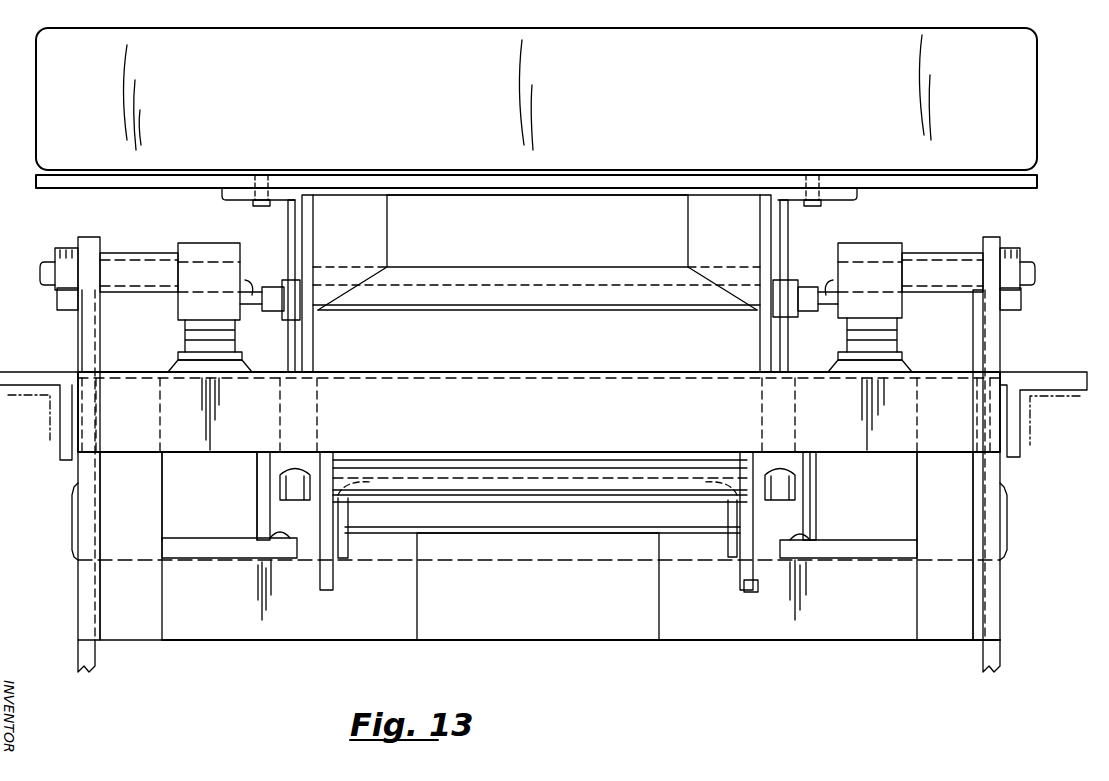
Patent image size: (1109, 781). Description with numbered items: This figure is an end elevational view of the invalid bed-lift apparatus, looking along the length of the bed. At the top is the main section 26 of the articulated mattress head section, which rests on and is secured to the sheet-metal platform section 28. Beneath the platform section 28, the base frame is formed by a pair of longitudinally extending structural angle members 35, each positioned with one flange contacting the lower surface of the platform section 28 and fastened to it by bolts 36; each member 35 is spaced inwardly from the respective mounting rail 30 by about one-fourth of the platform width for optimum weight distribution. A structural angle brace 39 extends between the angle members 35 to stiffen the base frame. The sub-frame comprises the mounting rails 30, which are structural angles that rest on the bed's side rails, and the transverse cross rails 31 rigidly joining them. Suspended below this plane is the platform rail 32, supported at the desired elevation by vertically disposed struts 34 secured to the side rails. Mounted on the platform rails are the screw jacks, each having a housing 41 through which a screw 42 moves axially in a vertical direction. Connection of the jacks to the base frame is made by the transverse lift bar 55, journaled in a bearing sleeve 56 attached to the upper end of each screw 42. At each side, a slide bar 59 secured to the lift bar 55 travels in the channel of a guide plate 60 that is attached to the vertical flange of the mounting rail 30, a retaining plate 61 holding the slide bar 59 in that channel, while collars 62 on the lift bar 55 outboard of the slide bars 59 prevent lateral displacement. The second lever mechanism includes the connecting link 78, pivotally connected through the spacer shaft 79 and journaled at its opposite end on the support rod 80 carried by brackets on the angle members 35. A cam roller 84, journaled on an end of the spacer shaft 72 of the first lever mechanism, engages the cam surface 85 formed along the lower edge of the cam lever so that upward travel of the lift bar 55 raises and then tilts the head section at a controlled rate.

The main section 26 is at (872, 28).
The platform section 28 is at (958, 186).
The mounting rail 30 is at (66, 430).
The cross rail 31 is at (540, 431).
The platform rail 32 is at (556, 615).
The strut 34 is at (145, 535).
The structural angle member 35 is at (228, 198).
The bolt 36 is at (287, 176).
The structural angle brace 39 is at (560, 254).
The housing 41 is at (207, 503).
The screw 42 is at (185, 330).
The lift bar 55 is at (1030, 284).
The bearing sleeve 56 is at (212, 243).
The slide bar 59 is at (90, 244).
The guide plate 60 is at (80, 343).
The retaining plate 61 is at (72, 520).
The collar 62 is at (60, 310).
The spacer shaft 72 is at (523, 522).
The connecting link 78 is at (306, 342).
The spacer shaft 79 is at (628, 482).
The support rod 80 is at (274, 285).
The cam roller 84 is at (745, 538).
The cam surface 85 is at (752, 592).